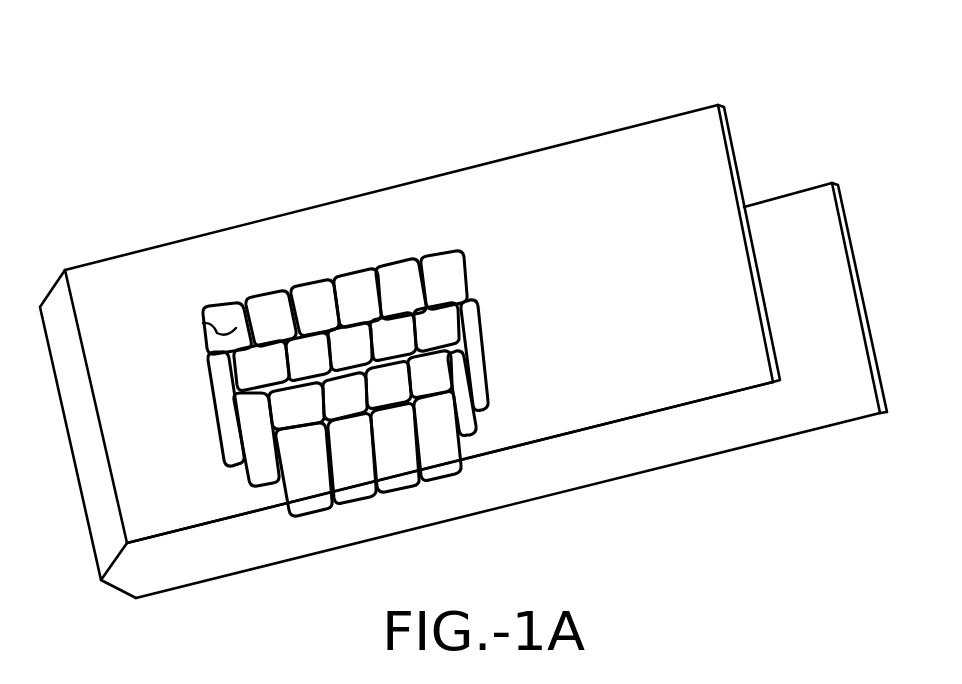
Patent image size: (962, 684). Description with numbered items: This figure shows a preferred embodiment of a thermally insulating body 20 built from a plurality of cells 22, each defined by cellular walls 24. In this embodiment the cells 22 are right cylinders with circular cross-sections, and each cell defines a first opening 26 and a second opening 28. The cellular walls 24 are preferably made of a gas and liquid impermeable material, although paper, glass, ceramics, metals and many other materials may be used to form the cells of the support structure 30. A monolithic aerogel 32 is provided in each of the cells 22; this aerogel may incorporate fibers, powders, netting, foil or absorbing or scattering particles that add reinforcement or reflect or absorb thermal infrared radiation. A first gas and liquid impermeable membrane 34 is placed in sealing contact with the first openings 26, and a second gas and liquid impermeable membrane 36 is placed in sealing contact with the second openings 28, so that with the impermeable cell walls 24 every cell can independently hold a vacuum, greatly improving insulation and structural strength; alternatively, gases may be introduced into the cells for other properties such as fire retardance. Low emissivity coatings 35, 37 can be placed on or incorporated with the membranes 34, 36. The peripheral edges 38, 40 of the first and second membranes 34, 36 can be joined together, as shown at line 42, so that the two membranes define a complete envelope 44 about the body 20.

The body 20 is at (237, 90).
The cells 22 is at (237, 292).
The cellular walls 24 is at (262, 297).
The first openings 26 is at (220, 304).
The second openings 28 is at (268, 486).
The support structure 30 is at (497, 242).
The monolithic aerogel 32 is at (200, 323).
The first gas and liquid impermeable membrane 34 is at (658, 163).
The low emissivity coating 35 is at (727, 128).
The second gas and liquid impermeable membrane 36 is at (793, 217).
The low emissivity coating 37 is at (845, 221).
The peripheral edge 38 is at (511, 450).
The peripheral edge 40 is at (370, 542).
The line 42 is at (87, 548).
The envelope 44 is at (481, 547).